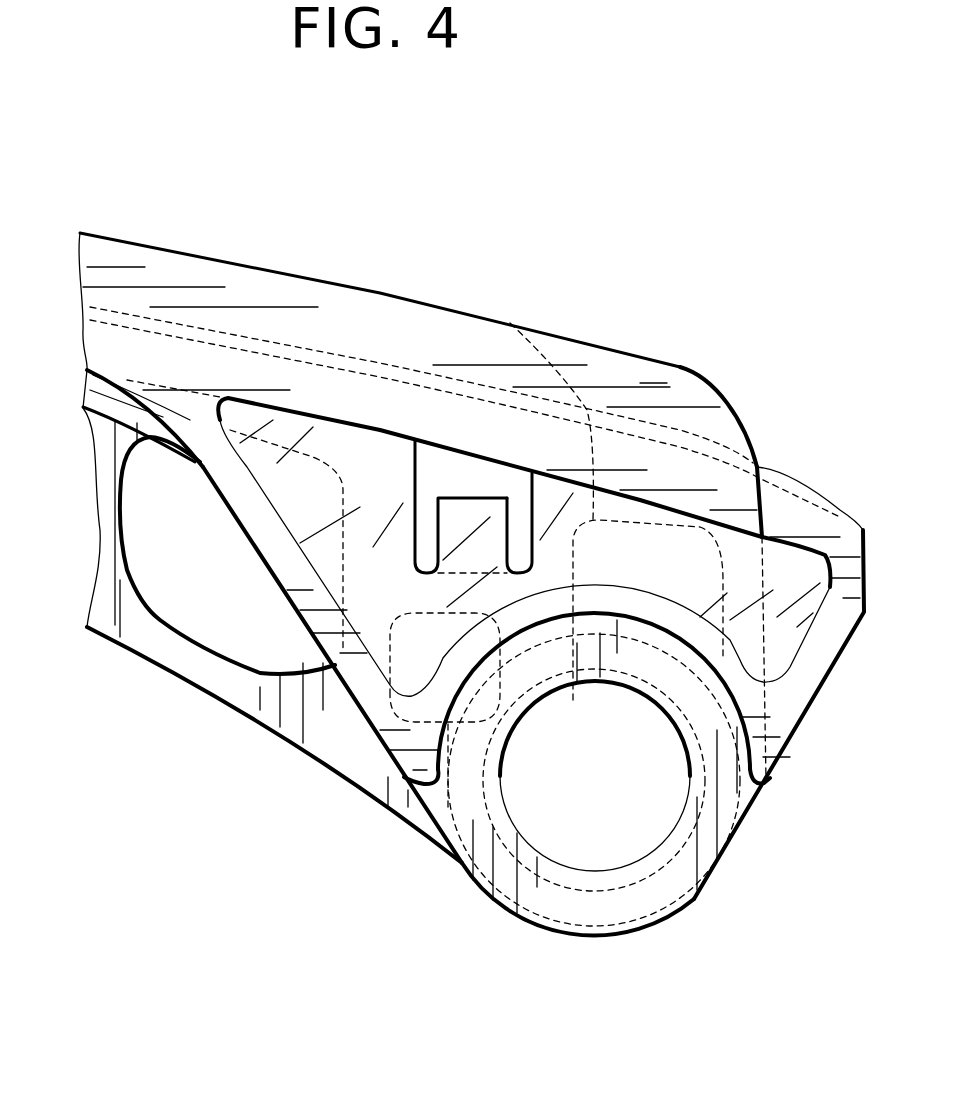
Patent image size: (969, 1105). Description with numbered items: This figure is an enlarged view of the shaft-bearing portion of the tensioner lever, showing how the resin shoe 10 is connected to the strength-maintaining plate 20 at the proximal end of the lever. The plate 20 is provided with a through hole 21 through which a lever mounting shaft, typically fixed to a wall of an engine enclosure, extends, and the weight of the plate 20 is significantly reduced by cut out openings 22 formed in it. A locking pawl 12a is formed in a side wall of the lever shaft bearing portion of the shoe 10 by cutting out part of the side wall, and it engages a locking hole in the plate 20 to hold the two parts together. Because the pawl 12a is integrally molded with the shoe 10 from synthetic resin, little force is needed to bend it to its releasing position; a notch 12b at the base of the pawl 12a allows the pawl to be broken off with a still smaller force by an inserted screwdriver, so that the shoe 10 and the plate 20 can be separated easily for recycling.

The shoe 10 is at (220, 287).
The locking pawl 12a is at (473, 507).
The notch 12b is at (477, 573).
The strength-maintaining plate 20 is at (323, 727).
The through hole 21 is at (617, 837).
The cut out openings 22 is at (217, 643).